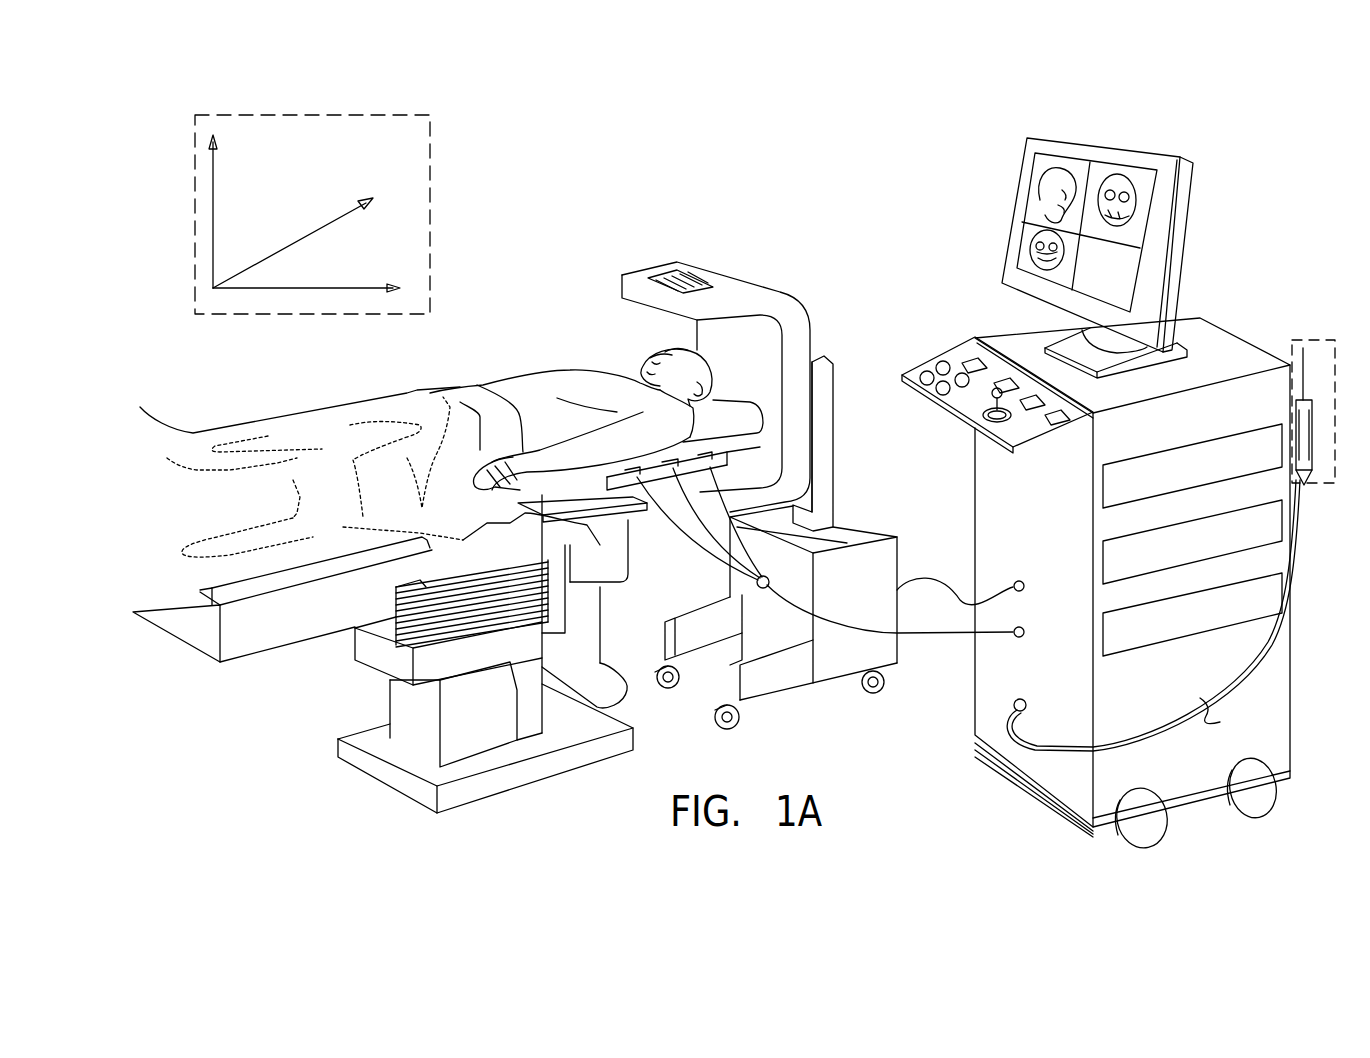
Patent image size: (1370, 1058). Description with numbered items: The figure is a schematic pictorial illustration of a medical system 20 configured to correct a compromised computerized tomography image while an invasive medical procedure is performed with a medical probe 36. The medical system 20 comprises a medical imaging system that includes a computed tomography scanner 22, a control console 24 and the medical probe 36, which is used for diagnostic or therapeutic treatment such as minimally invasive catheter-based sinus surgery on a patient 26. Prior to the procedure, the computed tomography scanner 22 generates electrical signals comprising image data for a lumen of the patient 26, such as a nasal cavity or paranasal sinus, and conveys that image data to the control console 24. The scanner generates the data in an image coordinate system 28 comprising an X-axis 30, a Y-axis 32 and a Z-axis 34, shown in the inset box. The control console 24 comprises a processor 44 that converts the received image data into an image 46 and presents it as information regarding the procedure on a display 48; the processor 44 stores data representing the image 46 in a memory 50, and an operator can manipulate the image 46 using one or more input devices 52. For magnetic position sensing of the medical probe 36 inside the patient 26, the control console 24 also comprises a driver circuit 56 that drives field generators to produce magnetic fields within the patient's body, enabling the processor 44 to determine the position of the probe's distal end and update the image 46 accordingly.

The medical system 20 is at (860, 131).
The computed tomography scanner 22 is at (853, 527).
The control console 24 is at (1212, 338).
The patient 26 is at (296, 422).
The image coordinate system 28 is at (432, 118).
The X-axis 30 is at (323, 225).
The Y-axis 32 is at (213, 203).
The Z-axis 34 is at (306, 289).
The medical probe 36 is at (1325, 340).
The processor 44 is at (1100, 480).
The image 46 is at (1023, 238).
The display 48 is at (1185, 197).
The memory 50 is at (1100, 556).
The input devices 52 is at (947, 367).
The driver circuit 56 is at (1100, 633).